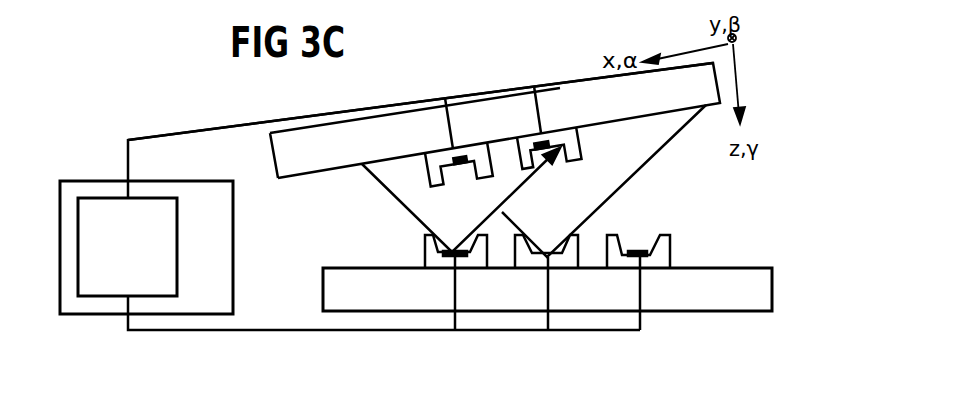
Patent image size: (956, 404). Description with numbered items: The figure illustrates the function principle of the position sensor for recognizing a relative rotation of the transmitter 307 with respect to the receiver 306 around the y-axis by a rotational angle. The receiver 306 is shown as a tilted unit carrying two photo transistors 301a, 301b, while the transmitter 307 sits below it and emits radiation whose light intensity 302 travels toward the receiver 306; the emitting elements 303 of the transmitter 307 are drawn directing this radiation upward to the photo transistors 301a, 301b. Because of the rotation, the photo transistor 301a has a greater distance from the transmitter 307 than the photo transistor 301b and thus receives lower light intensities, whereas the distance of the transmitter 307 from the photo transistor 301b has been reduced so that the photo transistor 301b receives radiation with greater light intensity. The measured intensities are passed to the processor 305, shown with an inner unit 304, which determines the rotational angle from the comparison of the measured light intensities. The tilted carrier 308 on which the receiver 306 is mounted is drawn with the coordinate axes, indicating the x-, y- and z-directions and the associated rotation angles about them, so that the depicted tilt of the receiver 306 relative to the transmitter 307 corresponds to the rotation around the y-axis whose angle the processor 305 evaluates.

The photo transistor 301a is at (551, 132).
The photo transistor 301b is at (462, 150).
The light intensity 302 is at (503, 183).
The sender light emitting elements 303 is at (490, 230).
The controller inner unit 304 is at (89, 210).
The processor 305 is at (199, 207).
The receiver 306 is at (286, 177).
The transmitter 307 is at (323, 289).
The plate / carrier 308 is at (740, 81).